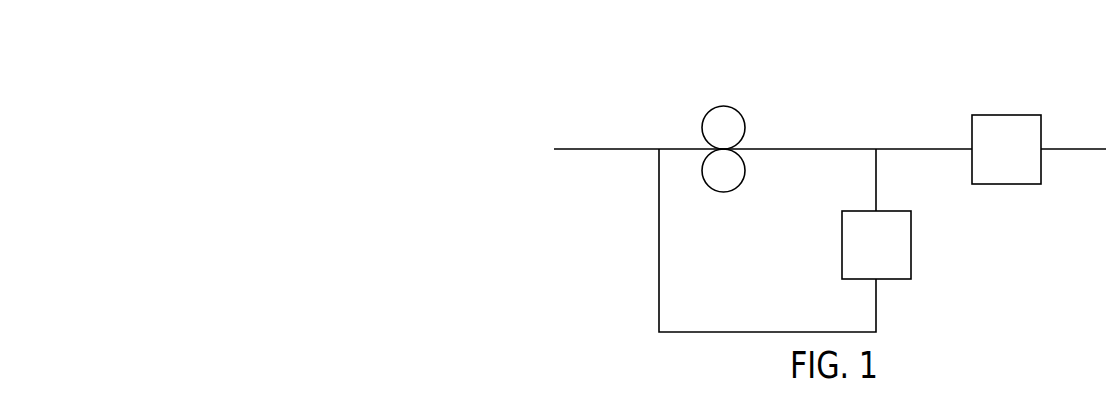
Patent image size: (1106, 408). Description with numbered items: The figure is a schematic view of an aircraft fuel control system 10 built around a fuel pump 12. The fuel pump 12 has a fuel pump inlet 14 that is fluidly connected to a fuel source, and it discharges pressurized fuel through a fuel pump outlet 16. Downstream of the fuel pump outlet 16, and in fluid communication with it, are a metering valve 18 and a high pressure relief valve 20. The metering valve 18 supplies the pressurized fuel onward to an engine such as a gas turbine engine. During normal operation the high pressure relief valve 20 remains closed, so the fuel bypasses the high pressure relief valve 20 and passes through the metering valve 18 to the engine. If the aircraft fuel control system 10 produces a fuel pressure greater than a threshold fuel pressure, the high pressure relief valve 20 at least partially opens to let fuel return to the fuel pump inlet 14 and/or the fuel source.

The aircraft fuel control system 10 is at (610, 95).
The fuel pump 12 is at (738, 123).
The fuel pump inlet 14 is at (718, 149).
The fuel pump outlet 16 is at (729, 149).
The metering valve 18 is at (1041, 132).
The high pressure relief valve 20 is at (911, 252).